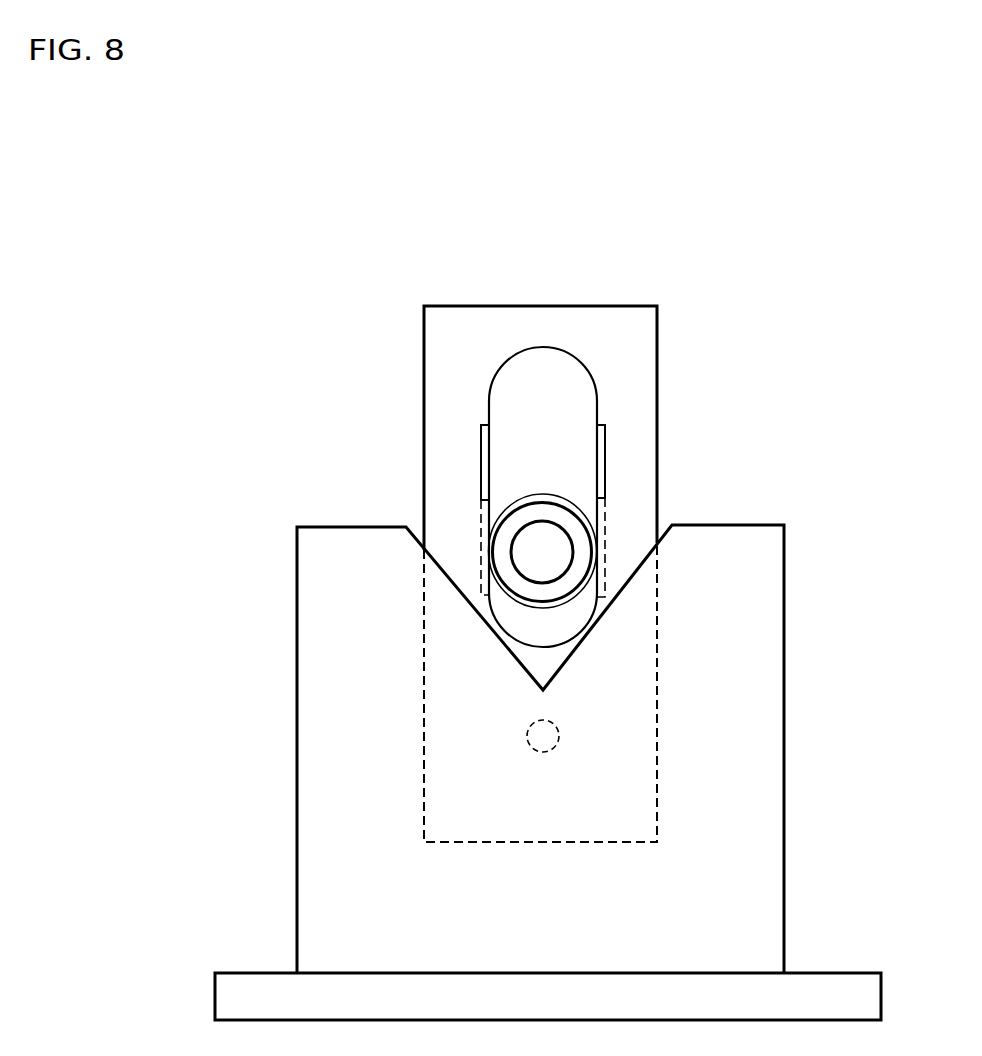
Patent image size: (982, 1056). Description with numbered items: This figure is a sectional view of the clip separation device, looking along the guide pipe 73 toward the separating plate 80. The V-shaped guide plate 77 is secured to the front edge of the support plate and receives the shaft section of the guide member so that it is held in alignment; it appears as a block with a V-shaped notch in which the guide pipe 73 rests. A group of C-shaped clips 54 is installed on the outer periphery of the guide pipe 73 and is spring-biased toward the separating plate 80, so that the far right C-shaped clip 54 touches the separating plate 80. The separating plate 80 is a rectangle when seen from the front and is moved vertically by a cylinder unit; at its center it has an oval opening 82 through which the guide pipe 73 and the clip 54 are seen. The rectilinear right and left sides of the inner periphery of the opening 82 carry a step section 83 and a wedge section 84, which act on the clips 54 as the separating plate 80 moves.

The guide plate 77 is at (760, 623).
The separating plate 80 is at (473, 322).
The opening 82 is at (585, 613).
The step section 83 is at (601, 535).
The wedge section 84 is at (485, 458).
The C-shaped clip 54 is at (543, 493).
The guide pipe 73 is at (518, 578).